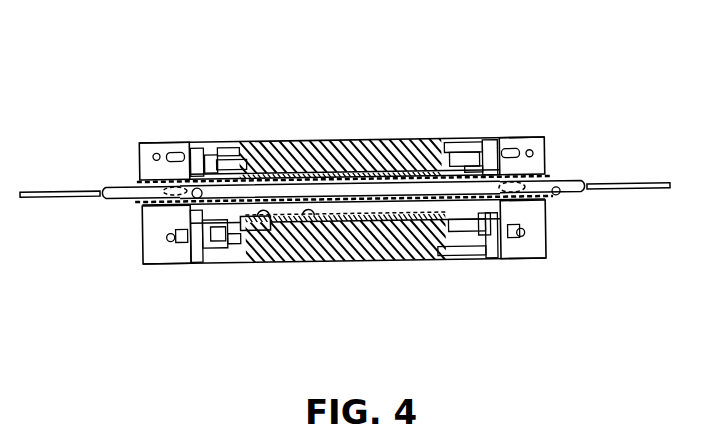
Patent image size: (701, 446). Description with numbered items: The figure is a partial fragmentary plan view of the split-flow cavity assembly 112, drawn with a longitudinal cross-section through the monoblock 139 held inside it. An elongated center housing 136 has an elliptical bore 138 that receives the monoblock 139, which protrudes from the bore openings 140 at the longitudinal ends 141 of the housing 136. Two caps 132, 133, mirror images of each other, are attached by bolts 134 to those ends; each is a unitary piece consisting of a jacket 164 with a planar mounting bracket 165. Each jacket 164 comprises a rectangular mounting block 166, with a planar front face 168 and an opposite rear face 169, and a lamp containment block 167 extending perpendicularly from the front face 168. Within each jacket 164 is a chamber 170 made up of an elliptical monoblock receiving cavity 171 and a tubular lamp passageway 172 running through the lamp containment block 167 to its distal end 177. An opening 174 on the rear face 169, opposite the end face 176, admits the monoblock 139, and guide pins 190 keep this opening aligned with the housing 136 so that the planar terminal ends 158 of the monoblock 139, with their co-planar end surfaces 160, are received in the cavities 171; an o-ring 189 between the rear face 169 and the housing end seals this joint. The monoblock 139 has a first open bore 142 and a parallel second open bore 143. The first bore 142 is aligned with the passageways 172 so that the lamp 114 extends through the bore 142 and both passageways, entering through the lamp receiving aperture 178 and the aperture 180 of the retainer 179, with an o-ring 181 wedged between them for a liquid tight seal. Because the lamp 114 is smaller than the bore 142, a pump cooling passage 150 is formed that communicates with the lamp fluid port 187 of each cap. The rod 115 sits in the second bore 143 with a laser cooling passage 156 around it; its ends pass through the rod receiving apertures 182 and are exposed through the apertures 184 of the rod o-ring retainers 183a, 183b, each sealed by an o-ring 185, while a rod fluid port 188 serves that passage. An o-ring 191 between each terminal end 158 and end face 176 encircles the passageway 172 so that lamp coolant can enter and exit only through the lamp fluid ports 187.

The cavity assembly 112 is at (204, 128).
The lamp 114 is at (590, 192).
The rod 115 is at (432, 263).
The cap 132 is at (167, 283).
The cap 133 is at (493, 140).
The bolts 134 is at (453, 140).
The center housing 136 is at (352, 172).
The bore 138 is at (422, 218).
The monoblock 139 is at (278, 168).
The bore openings 140 is at (238, 147).
The longitudinal ends 141 is at (218, 252).
The first open cylindrical bore 142 is at (405, 160).
The second open cylindrical bore 143 is at (293, 248).
The pump cooling passage 150 is at (382, 155).
The laser cooling passage 156 is at (338, 220).
The terminal end 158 is at (165, 170).
The planar end surface 160 is at (478, 262).
The jacket 164 is at (517, 262).
The planar mounting bracket 165 is at (548, 238).
The mounting block 166 is at (533, 170).
The lamp containment block 167 is at (546, 162).
The front face 168 is at (170, 152).
The rear face 169 is at (463, 262).
The chamber 170 is at (218, 148).
The monoblock receiving cavity 171 is at (477, 140).
The lamp passageway 172 is at (188, 176).
The opening 174 is at (452, 143).
The end face 176 is at (540, 258).
The distal end 177 is at (175, 206).
The lamp receiving aperture 178 is at (140, 175).
The retainer 179 is at (546, 172).
The aperture 180 is at (558, 195).
The o-ring 181 is at (546, 170).
The rod receiving aperture 182 is at (575, 245).
The rod o-ring retainer 183a is at (155, 262).
The rod o-ring retainer 183b is at (540, 205).
The aperture 184 is at (187, 208).
The o-ring 185 is at (182, 146).
The lamp fluid port 187 is at (150, 200).
The rod fluid port 188 is at (183, 262).
The o-ring 189 is at (262, 263).
The guide pins 190 is at (252, 263).
The o-ring 191 is at (503, 162).